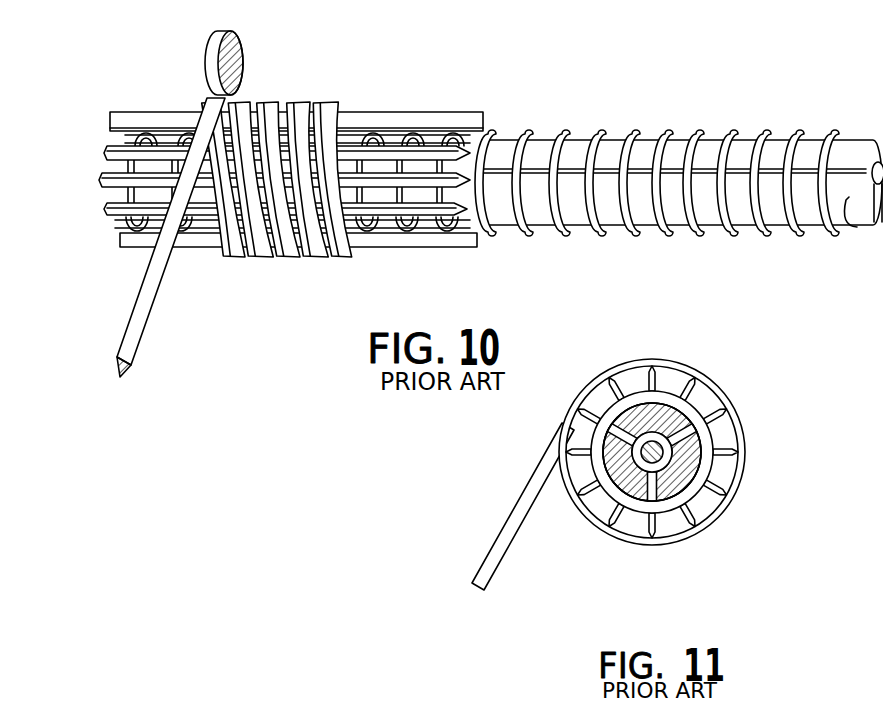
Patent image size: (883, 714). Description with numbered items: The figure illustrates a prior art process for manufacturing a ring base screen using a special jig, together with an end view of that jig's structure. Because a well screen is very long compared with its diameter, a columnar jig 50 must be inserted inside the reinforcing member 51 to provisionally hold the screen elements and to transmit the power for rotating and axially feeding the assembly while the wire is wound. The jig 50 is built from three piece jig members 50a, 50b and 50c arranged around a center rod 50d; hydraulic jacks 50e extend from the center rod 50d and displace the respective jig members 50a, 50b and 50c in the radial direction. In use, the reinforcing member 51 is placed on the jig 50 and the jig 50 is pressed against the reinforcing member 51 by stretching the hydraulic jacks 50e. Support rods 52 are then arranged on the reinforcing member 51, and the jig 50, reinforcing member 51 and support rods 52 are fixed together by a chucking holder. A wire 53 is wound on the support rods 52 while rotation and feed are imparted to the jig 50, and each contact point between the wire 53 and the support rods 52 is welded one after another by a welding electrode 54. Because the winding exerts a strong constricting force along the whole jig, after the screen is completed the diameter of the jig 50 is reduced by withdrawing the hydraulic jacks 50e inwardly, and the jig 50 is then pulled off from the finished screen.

In FIG. 10, the columnar jig 50 is at (742, 222).
In FIG. 11, the columnar jig 50 is at (670, 403).
In FIG. 11, the jig member 50a is at (645, 412).
In FIG. 11, the jig member 50b is at (628, 480).
In FIG. 11, the jig member 50c is at (690, 448).
In FIG. 11, the center rod 50d is at (658, 470).
In FIG. 11, the hydraulic jacks 50e is at (705, 492).
In FIG. 10, the reinforcing member 51 is at (632, 138).
In FIG. 11, the reinforcing member 51 is at (600, 470).
In FIG. 10, the support rods 52 is at (428, 120).
In FIG. 11, the support rods 52 is at (650, 540).
In FIG. 10, the wire 53 is at (135, 318).
In FIG. 11, the wire 53 is at (520, 496).
In FIG. 10, the welding electrode 54 is at (208, 57).